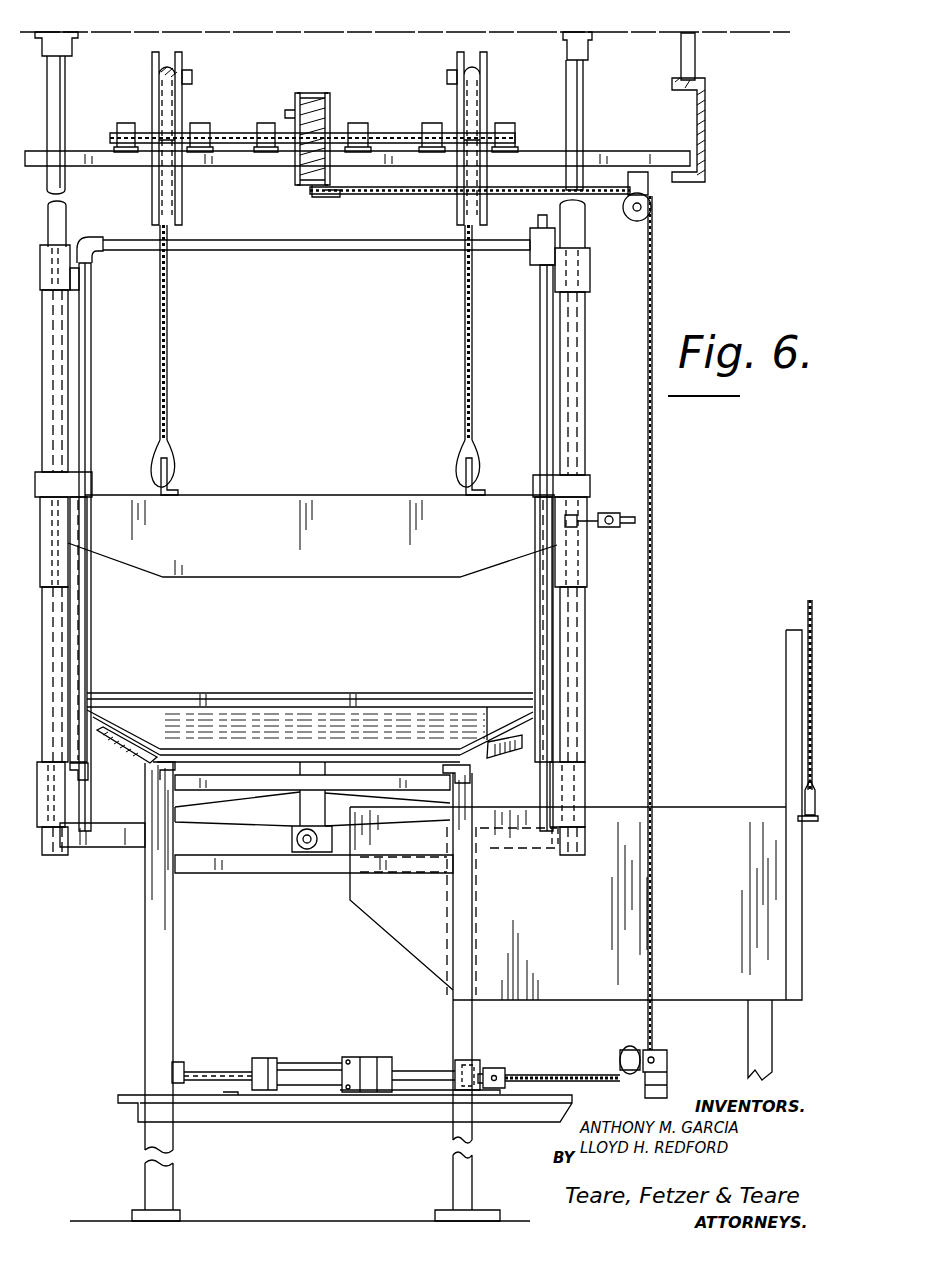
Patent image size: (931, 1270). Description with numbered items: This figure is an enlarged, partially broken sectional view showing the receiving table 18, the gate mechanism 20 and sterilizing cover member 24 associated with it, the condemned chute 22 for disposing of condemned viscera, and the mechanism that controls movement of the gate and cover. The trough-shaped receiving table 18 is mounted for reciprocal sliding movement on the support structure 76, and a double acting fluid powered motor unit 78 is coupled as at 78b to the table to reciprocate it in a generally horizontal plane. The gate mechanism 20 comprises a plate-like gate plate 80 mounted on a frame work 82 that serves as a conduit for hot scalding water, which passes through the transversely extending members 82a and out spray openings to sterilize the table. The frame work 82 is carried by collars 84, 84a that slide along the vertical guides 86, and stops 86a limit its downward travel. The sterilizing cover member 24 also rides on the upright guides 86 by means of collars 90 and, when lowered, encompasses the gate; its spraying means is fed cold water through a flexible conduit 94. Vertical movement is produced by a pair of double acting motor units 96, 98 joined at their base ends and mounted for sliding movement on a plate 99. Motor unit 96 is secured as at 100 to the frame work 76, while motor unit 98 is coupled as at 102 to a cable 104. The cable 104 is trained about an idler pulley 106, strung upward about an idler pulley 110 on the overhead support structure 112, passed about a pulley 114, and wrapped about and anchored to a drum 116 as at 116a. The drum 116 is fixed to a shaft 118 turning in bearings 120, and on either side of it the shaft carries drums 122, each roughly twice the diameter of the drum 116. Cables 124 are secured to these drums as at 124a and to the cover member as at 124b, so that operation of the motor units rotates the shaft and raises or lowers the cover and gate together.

The receiving table 18 is at (503, 772).
The gate mechanism 20 is at (425, 688).
The condemned chute 22 is at (706, 805).
The sterilizing cover member 24 is at (273, 489).
The support structure 76 is at (164, 960).
The fluid powered motor unit 78 is at (292, 838).
The coupling to the table 78b is at (305, 797).
The gate plate 80 is at (300, 696).
The frame work 82 is at (89, 636).
The transversely extending members 82a is at (128, 733).
The collar 84 is at (68, 482).
The collar 84a is at (42, 268).
The vertical guides 86 is at (62, 389).
The stops 86a is at (72, 776).
The collars 90 is at (68, 567).
The flexible conduit 94 is at (630, 515).
The fluid powered motor unit 96 is at (327, 1040).
The fluid powered motor unit 98 is at (423, 1069).
The plate 99 is at (238, 1095).
The coupling to frame work 100 is at (185, 1062).
The coupling to cable 102 is at (498, 1067).
The cable 104 is at (655, 627).
The idler pulley 106 is at (626, 1048).
The idler pulley 110 is at (630, 222).
The overhead support structure 112 is at (707, 125).
The pulley 114 is at (313, 200).
The drum 116 is at (330, 105).
The cable anchor 116a is at (298, 95).
The shaft 118 is at (413, 115).
The bearings 120 is at (122, 123).
The drums 122 is at (184, 100).
The cables 124 is at (169, 299).
The cable attachment to drum 124a is at (193, 76).
The cable attachment to cover 124b is at (171, 478).